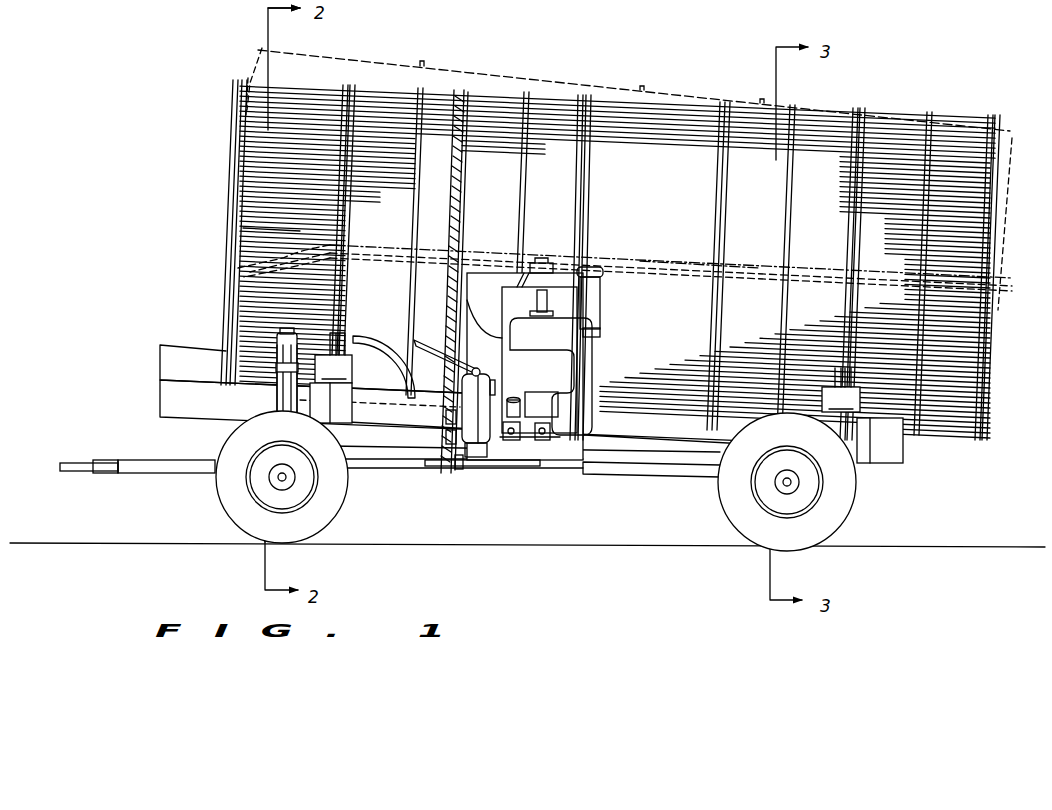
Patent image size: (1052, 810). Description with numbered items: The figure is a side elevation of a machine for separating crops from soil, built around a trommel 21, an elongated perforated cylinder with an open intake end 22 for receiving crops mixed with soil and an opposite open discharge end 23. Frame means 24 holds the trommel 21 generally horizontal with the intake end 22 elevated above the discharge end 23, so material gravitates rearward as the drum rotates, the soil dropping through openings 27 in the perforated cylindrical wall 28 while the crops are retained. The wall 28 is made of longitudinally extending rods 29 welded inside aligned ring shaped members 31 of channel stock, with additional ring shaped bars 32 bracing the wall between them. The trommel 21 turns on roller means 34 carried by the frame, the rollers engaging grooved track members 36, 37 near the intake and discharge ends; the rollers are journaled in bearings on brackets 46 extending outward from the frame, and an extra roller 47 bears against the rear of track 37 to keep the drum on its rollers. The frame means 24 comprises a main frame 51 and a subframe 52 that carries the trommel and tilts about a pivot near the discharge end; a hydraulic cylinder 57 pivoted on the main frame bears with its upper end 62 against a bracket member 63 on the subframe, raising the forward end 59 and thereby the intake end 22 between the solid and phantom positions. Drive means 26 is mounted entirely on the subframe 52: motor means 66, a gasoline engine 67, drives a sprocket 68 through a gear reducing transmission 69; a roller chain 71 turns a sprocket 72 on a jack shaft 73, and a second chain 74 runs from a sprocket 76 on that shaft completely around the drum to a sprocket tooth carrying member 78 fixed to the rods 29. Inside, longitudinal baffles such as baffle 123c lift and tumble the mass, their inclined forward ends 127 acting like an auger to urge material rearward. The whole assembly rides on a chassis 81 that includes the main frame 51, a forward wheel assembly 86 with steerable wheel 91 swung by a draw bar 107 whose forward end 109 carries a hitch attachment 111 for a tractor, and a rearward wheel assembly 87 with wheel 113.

The trommel 21 is at (634, 102).
The intake end 22 is at (222, 189).
The discharge end 23 is at (1040, 218).
The frame means 24 is at (425, 398).
The drive means 26 is at (502, 455).
The openings 27 is at (233, 268).
The perforated cylindrical wall 28 is at (246, 146).
The rods 29 is at (248, 222).
The ring shaped members 31 is at (232, 100).
The ring shaped bars 32 is at (421, 88).
The roller means 34 is at (344, 340).
The grooved track member 36 is at (350, 85).
The grooved track member 37 is at (858, 108).
The brackets 46 is at (606, 398).
The roller 47 is at (865, 413).
The main frame 51 is at (662, 478).
The subframe 52 is at (709, 420).
The hydraulic cylinder 57 is at (286, 397).
The forward end 59 is at (231, 409).
The upper end 62 is at (275, 372).
The bracket member 63 is at (271, 395).
The motor means 66 is at (574, 359).
The gasoline engine 67 is at (557, 330).
The sprocket 68 is at (446, 416).
The gear reducing transmission 69 is at (484, 368).
The roller chain 71 is at (444, 437).
The sprocket 72 is at (459, 471).
The jack shaft 73 is at (476, 458).
The second chain 74 is at (447, 305).
The sprocket 76 is at (430, 463).
The sprocket tooth carrying member 78 is at (462, 186).
The chassis 81 is at (110, 473).
The forward wheel assembly 86 is at (284, 477).
The rearward wheel assembly 87 is at (783, 482).
The wheel 91 is at (236, 513).
The draw bar 107 is at (197, 465).
The forward end 109 is at (147, 466).
The hitch attachment 111 is at (82, 471).
The wheel 113 is at (836, 517).
The baffle 123c is at (688, 267).
The forward ends 127 is at (325, 252).